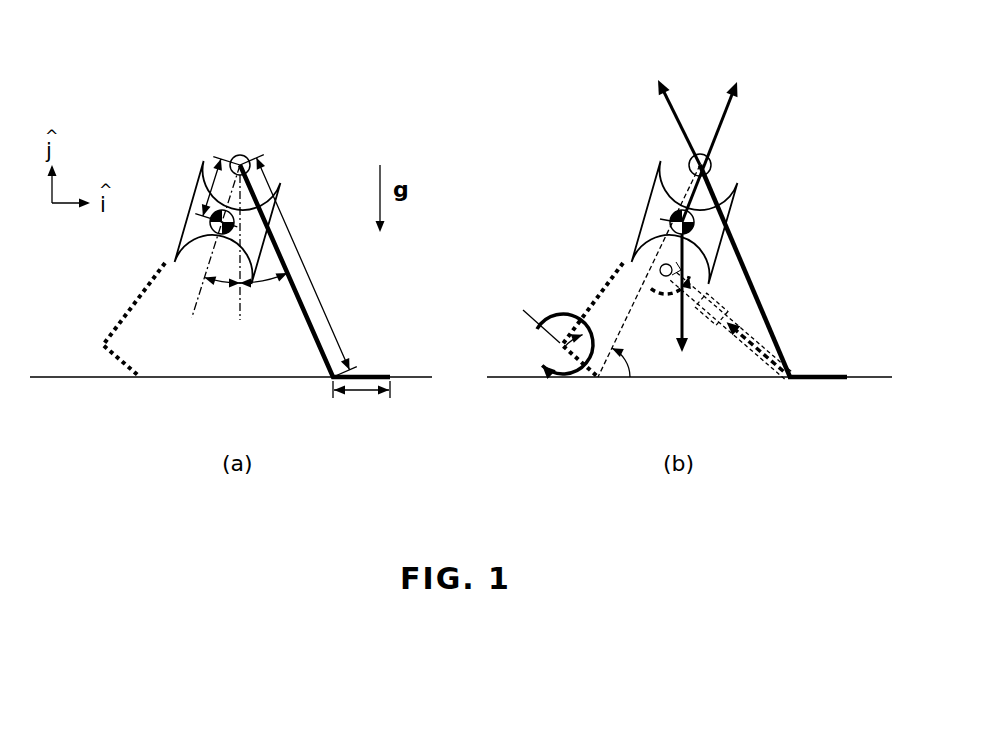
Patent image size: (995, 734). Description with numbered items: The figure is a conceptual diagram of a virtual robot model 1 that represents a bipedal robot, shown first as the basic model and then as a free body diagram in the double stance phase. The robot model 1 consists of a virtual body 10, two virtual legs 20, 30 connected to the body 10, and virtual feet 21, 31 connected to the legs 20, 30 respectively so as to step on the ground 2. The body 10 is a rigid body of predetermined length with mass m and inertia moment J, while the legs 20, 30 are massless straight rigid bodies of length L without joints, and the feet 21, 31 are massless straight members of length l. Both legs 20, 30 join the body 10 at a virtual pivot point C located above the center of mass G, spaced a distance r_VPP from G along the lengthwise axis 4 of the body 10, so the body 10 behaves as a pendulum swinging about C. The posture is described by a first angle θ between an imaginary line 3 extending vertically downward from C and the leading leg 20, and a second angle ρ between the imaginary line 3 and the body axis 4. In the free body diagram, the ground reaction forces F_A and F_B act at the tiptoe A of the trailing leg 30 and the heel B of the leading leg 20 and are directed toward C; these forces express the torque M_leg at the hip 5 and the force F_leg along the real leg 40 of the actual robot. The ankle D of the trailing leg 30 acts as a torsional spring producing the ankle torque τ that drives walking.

The virtual robot model 1 is at (220, 110).
The ground 2 is at (712, 378).
The imaginary line 3 is at (243, 312).
The lengthwise axis of the body 4 is at (197, 293).
The hip 5 is at (661, 266).
The virtual body 10 is at (653, 175).
The virtual leg (leading leg) 20 is at (737, 243).
The virtual foot 21 is at (818, 373).
The virtual leg (trailing leg) 30 is at (600, 288).
The virtual foot 31 is at (560, 378).
The real leg 40 is at (723, 303).